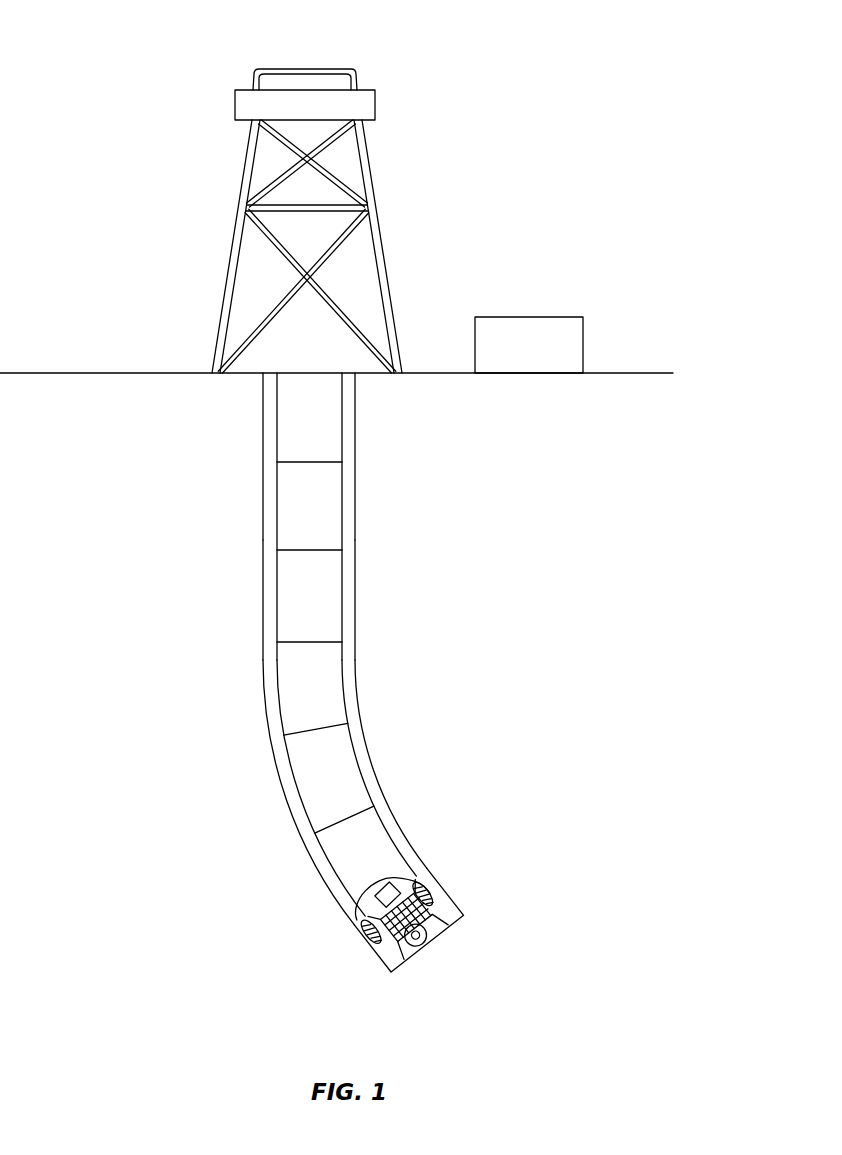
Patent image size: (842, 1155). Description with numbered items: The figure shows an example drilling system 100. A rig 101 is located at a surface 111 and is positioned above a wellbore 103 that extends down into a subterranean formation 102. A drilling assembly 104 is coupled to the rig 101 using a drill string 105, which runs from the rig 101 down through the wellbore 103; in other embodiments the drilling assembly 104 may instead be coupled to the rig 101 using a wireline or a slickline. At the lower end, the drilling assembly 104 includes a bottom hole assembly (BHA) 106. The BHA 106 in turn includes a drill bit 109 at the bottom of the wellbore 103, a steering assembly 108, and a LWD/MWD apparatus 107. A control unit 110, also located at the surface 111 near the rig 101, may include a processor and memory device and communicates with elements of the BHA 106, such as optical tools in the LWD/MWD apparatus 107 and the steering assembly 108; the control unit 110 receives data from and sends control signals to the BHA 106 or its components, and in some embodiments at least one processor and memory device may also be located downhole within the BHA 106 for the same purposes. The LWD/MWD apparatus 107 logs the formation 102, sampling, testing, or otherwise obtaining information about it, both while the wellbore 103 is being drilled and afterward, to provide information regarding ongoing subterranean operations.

The drilling system 100 is at (528, 146).
The rig 101 is at (375, 100).
The subterranean formation 102 is at (512, 533).
The wellbore 103 is at (263, 508).
The drilling assembly 104 is at (263, 592).
The drill string 105 is at (343, 572).
The bottom hole assembly (BHA) 106 is at (313, 870).
The LWD/MWD apparatus 107 is at (363, 770).
The steering assembly 108 is at (412, 854).
The drill bit 109 is at (462, 921).
The control unit 110 is at (512, 357).
The surface 111 is at (633, 372).